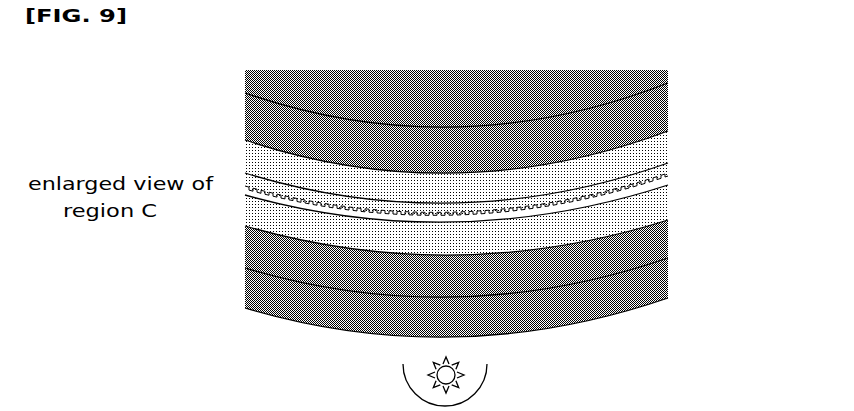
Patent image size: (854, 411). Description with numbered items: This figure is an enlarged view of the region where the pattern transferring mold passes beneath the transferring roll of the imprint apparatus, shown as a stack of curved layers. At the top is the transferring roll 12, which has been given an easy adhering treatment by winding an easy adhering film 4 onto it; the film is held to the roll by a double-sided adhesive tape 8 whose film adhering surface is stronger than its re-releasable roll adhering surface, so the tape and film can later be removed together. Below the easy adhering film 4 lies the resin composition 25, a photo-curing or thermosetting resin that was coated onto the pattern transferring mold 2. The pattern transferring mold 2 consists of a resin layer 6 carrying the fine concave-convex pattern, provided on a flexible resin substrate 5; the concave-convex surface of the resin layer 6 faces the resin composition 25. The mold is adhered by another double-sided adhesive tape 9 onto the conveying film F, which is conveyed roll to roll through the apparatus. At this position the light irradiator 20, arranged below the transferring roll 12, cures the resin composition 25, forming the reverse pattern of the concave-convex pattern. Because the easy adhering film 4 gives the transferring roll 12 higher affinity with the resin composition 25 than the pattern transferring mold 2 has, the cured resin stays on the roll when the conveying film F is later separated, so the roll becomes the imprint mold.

The transferring roll 12 is at (632, 74).
The double-sided adhesive tape 8 is at (663, 115).
The easy adhering film 4 is at (668, 150).
The resin composition 25 is at (668, 165).
The resin layer 6 is at (668, 180).
The resin substrate 5 is at (668, 202).
The pattern transferring mold 2 is at (500, 205).
The double-sided adhesive tape 9 is at (668, 242).
The conveying film F is at (668, 287).
The light irradiator 20 is at (496, 389).